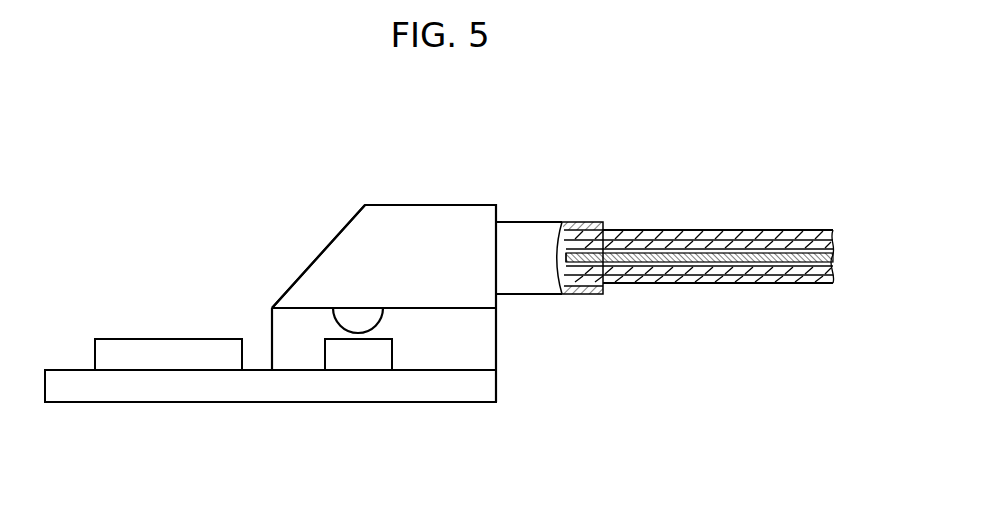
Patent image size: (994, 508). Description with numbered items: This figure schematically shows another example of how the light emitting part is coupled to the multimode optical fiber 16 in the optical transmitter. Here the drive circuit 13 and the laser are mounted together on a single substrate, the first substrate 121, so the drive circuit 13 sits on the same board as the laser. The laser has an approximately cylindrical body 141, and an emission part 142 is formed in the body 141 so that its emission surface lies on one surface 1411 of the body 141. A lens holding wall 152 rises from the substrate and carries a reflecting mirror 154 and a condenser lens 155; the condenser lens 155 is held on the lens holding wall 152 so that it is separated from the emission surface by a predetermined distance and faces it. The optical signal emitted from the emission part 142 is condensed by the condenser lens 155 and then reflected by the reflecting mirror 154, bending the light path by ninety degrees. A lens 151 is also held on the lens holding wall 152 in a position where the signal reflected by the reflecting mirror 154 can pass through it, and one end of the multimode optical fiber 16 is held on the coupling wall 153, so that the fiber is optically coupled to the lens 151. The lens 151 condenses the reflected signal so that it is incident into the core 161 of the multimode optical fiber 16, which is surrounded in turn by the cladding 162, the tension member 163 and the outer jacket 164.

The drive circuit 13 is at (172, 346).
The multimode optical fiber 16 is at (802, 224).
The first substrate 121 is at (236, 393).
The body 141 is at (368, 380).
The emission part 142 is at (272, 330).
The one surface 1411 is at (386, 336).
The lens 151 is at (498, 226).
The lens holding wall 152 is at (430, 226).
The coupling wall 153 is at (577, 294).
The reflecting mirror 154 is at (332, 258).
The condenser lens 155 is at (344, 304).
The core 161 is at (752, 249).
The cladding 162 is at (693, 250).
The tension member 163 is at (668, 283).
The jacket 164 is at (746, 283).